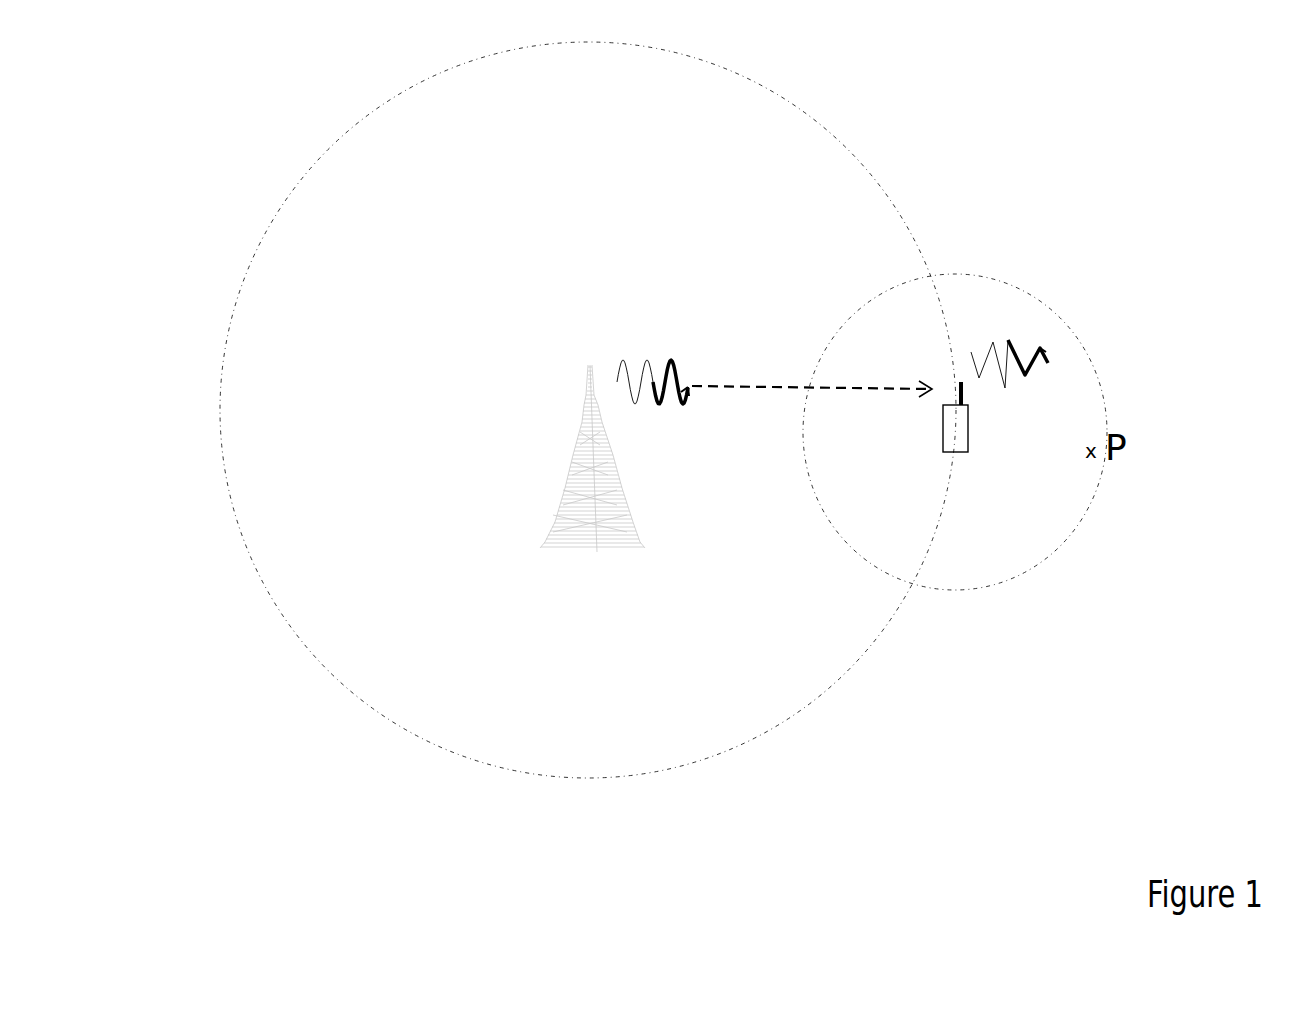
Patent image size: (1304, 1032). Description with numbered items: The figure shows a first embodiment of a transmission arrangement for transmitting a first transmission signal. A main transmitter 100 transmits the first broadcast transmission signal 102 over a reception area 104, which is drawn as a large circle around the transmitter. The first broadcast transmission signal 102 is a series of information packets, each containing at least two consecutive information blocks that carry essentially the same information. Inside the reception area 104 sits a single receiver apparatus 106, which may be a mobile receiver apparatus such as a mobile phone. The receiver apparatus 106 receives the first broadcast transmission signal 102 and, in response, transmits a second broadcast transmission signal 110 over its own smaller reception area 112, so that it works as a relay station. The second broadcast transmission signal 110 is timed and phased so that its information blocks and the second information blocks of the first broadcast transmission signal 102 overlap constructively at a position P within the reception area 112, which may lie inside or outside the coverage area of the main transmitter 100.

The main transmitter 100 is at (580, 458).
The first broadcast transmission signal 102 is at (774, 357).
The reception area 104 is at (560, 410).
The receiver apparatus 106 is at (982, 428).
The second broadcast transmission signal 110 is at (1009, 349).
The reception area 112 is at (971, 432).